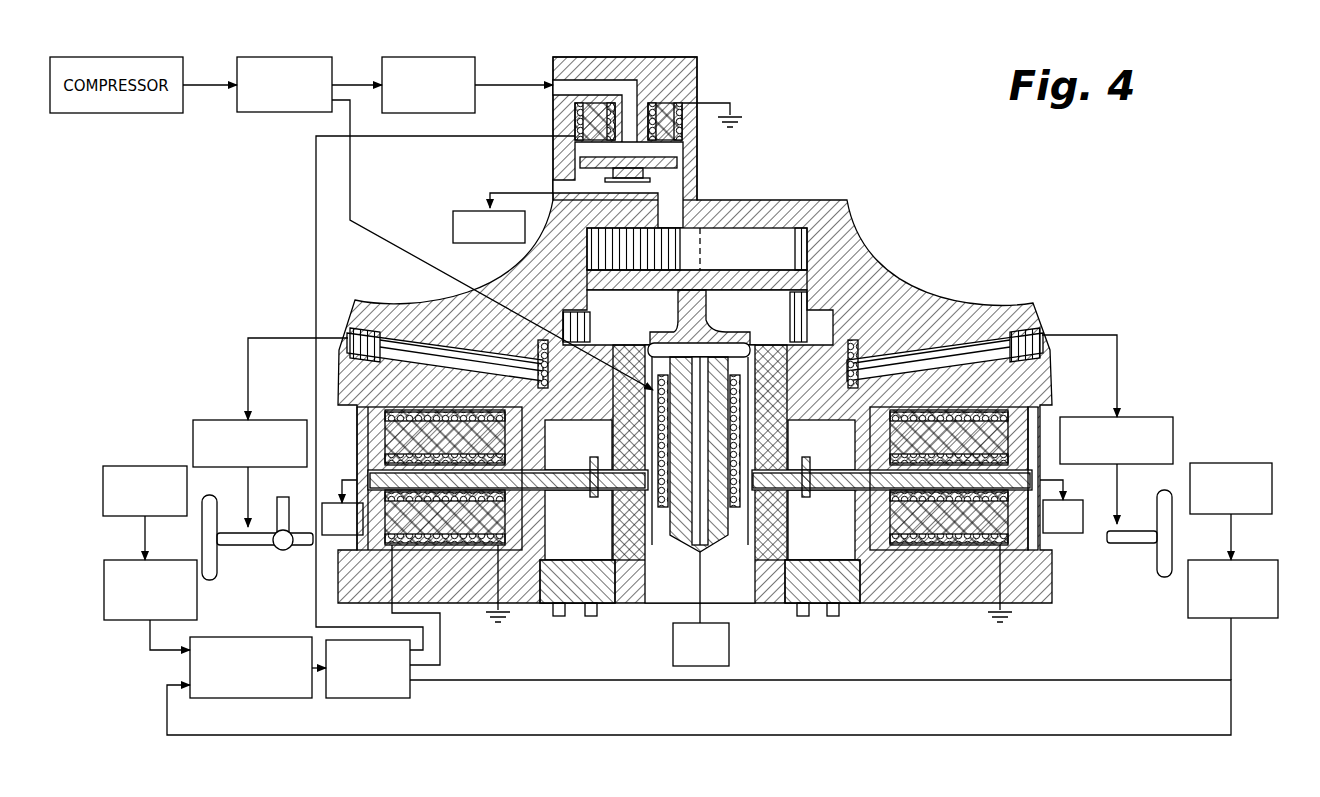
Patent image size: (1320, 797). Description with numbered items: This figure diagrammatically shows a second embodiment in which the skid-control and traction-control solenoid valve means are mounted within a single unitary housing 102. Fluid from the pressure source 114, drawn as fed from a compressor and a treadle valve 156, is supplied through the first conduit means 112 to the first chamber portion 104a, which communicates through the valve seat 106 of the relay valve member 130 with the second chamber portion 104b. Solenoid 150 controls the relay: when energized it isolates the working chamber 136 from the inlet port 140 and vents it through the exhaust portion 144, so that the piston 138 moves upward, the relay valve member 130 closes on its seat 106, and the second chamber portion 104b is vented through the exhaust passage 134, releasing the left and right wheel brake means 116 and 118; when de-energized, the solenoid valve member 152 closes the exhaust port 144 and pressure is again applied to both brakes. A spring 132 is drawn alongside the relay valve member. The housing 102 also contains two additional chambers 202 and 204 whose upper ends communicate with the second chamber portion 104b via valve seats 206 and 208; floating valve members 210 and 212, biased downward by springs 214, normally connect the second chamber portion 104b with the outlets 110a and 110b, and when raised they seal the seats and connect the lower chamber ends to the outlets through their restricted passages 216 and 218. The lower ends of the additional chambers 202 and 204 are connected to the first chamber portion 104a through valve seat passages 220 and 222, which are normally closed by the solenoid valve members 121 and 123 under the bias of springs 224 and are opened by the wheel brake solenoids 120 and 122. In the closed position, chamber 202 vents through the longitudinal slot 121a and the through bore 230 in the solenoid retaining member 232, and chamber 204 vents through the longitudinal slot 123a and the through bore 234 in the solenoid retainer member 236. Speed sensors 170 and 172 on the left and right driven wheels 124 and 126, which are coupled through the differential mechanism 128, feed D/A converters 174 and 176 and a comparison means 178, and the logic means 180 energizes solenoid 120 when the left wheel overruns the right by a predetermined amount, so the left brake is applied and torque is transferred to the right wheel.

The housing 102 is at (1048, 603).
The first chamber portion 104a is at (700, 588).
The second chamber portion 104b is at (815, 318).
The valve seat 106 is at (725, 318).
The outlet port 110a is at (368, 308).
The outlet port 110b is at (1027, 306).
The first conduit means 112 is at (351, 172).
The pressure source 114 is at (280, 56).
The left wheel brake means 116 is at (226, 420).
The right wheel brake means 118 is at (1150, 417).
The wheel brake solenoid 120 is at (358, 444).
The solenoid valve member 121 is at (447, 577).
The longitudinal slot 121a is at (445, 437).
The wheel brake solenoid 122 is at (970, 442).
The solenoid valve member 123 is at (951, 556).
The longitudinal slot 123a is at (949, 437).
The left driven wheel 124 is at (257, 545).
The right driven wheel 126 is at (1158, 570).
The differential mechanism 128 is at (283, 551).
The relay valve member 130 is at (714, 540).
The spring 132 is at (792, 544).
The exhaust passage 134 is at (703, 553).
The working chamber 136 is at (770, 232).
The piston 138 is at (800, 266).
The inlet port 140 is at (572, 88).
The exhaust port 144 is at (565, 190).
The solenoid 150 is at (668, 102).
The solenoid valve member 152 is at (680, 161).
The treadle valve 156 is at (428, 56).
The left speed sensor 170 is at (130, 466).
The right speed sensor 172 is at (1233, 463).
The left D/A converter 174 is at (104, 582).
The right D/A converter 176 is at (1188, 588).
The comparison means 178 is at (246, 637).
The logic means 180 is at (356, 698).
The additional chamber 202 is at (596, 560).
The additional chamber 204 is at (848, 560).
The valve seat 206 is at (445, 356).
The valve seat 208 is at (945, 356).
The floating valve member 210 is at (578, 445).
The floating valve member 212 is at (821, 445).
The spring 214 is at (545, 335).
The passage 216 is at (548, 414).
The passage 218 is at (898, 412).
The valve seat passage 220 is at (578, 525).
The valve seat passage 222 is at (800, 512).
The spring 224 is at (575, 490).
The through bore 230 is at (406, 514).
The solenoid retaining member 232 is at (364, 406).
The through bore 234 is at (992, 514).
The solenoid retainer member 236 is at (1046, 548).